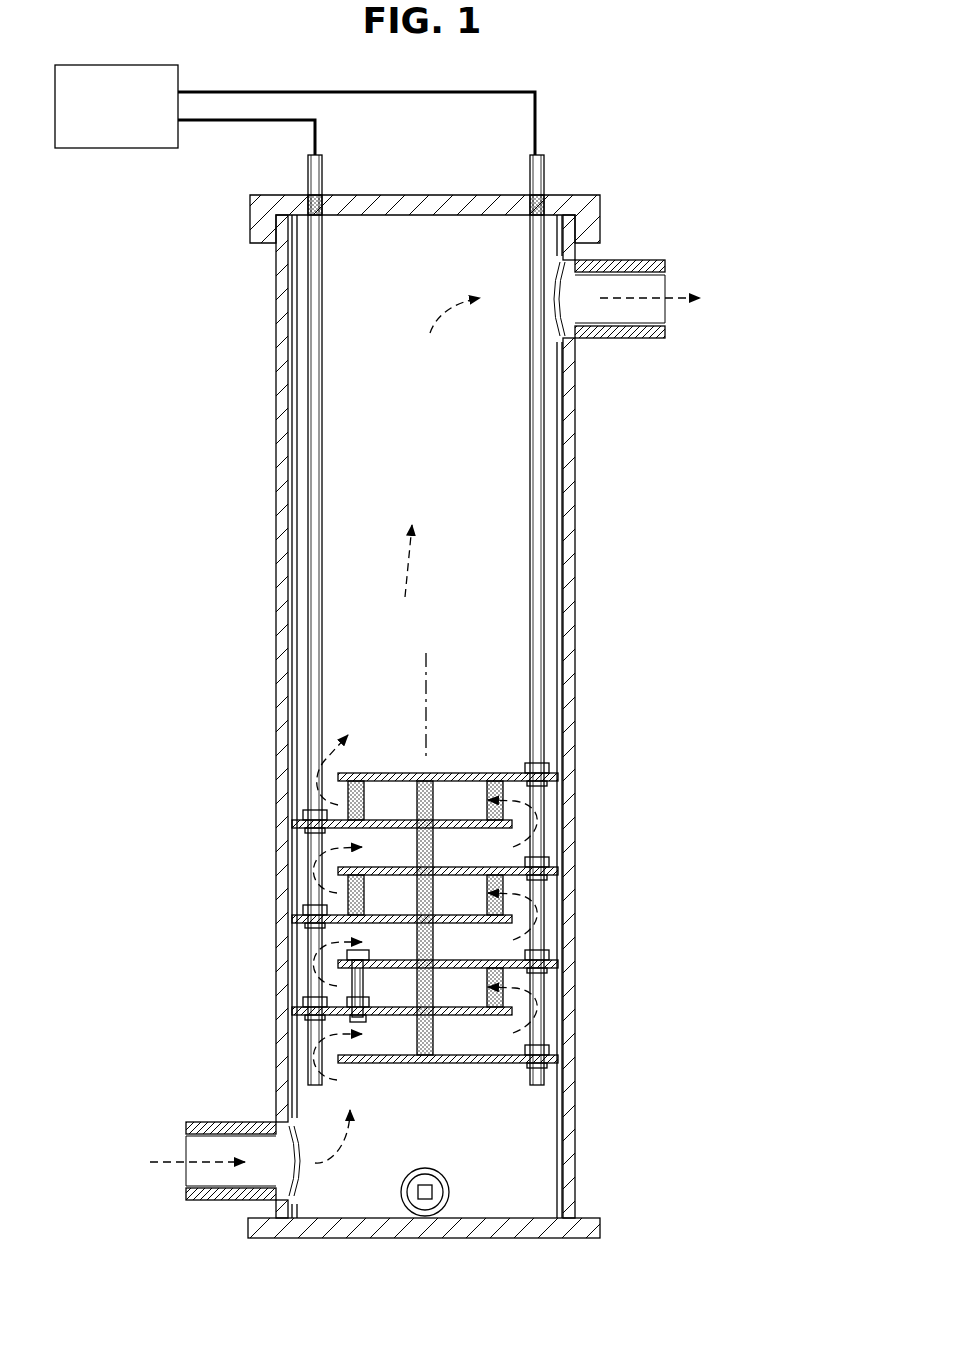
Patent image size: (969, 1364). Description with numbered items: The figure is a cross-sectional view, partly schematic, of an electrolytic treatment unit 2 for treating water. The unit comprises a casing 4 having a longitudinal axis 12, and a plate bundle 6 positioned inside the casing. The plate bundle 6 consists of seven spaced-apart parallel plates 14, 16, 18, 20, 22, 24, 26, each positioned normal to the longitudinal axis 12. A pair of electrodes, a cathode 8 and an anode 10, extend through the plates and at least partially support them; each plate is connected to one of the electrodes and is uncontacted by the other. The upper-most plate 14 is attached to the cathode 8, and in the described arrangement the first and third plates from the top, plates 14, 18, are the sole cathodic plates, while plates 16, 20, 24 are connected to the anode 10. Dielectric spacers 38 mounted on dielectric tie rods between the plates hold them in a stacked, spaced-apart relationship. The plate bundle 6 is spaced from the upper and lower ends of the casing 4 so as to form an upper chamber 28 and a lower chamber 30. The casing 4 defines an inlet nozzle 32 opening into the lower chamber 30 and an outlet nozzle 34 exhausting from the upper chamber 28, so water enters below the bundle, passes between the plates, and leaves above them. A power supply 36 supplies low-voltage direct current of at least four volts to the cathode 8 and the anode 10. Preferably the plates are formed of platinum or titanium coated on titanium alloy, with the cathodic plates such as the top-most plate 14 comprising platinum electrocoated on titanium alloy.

The electrolytic treatment unit 2 is at (665, 96).
The casing 4 is at (275, 478).
The plate bundle 6 is at (497, 750).
The cathode 8 is at (530, 175).
The anode 10 is at (322, 182).
The longitudinal axis 12 is at (430, 700).
The upper-most plate 14 is at (553, 783).
The plate 16 is at (297, 830).
The plate 18 is at (553, 877).
The plate 20 is at (297, 925).
The plate 22 is at (553, 958).
The plate 24 is at (297, 1017).
The plate 26 is at (553, 1065).
The upper chamber 28 is at (411, 430).
The lower chamber 30 is at (411, 1130).
The inlet nozzle 32 is at (215, 1122).
The outlet nozzle 34 is at (632, 260).
The power supply 36 is at (103, 120).
The dielectric spacers 38 is at (495, 970).